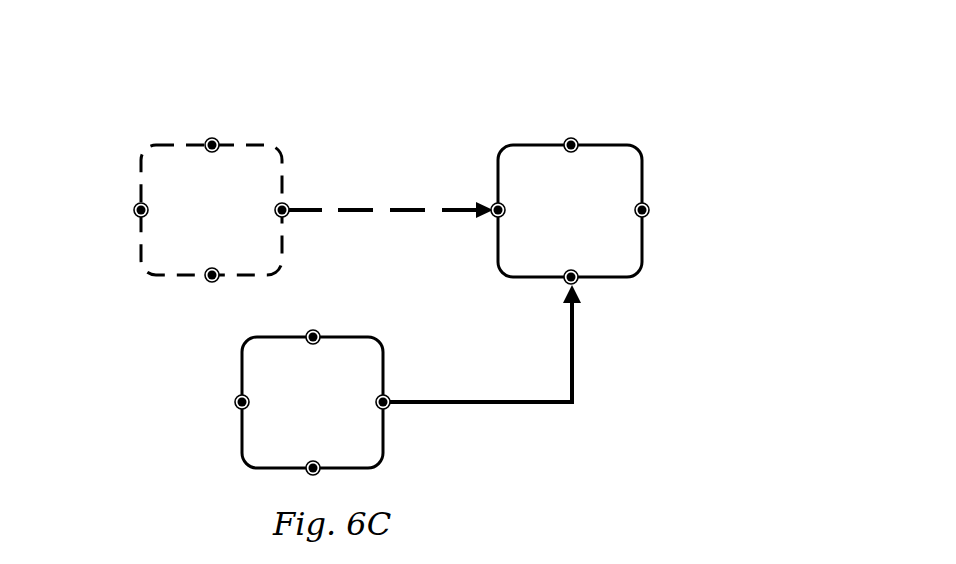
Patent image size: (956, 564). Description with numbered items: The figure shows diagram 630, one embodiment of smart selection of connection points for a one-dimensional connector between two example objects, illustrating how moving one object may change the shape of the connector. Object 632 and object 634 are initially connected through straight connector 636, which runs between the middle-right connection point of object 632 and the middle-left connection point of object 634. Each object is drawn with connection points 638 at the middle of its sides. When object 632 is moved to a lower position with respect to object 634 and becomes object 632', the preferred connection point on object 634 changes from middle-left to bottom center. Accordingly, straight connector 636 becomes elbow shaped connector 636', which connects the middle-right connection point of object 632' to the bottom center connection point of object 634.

The diagram 630 is at (677, 45).
The object 632 is at (196, 184).
The object (moved) 632' is at (286, 391).
The object 634 is at (540, 144).
The straight connector 636 is at (391, 189).
The elbow shaped connector 636' is at (485, 343).
The connection node 638 is at (285, 192).